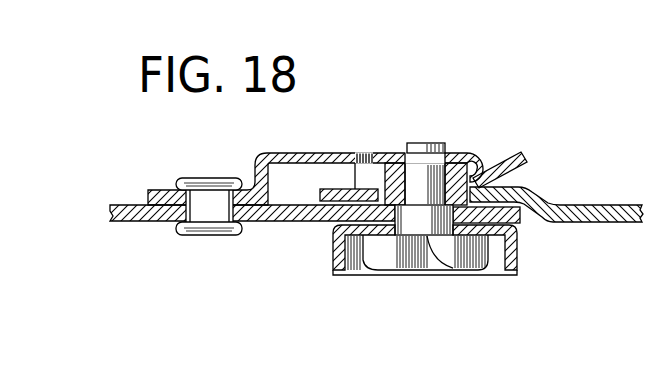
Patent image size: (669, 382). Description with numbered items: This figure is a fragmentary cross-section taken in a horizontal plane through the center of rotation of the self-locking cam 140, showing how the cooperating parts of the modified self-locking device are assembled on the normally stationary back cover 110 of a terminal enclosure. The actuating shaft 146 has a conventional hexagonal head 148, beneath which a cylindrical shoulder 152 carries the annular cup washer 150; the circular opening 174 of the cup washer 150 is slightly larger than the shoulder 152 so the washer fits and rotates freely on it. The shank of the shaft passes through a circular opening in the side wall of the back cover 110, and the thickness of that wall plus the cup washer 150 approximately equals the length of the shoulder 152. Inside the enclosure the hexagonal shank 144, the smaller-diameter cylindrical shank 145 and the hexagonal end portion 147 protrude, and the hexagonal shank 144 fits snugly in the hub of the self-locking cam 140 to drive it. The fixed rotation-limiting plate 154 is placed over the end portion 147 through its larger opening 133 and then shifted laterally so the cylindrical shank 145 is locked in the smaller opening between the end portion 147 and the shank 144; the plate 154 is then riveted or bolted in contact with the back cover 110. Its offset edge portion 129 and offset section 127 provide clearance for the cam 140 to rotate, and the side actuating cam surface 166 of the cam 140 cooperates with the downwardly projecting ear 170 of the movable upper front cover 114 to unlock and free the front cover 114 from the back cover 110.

The back cover 110 is at (133, 222).
The upper front cover 114 is at (557, 173).
The offset section 127 is at (326, 134).
The offset edge portion 129 is at (497, 156).
The larger opening 133 is at (359, 153).
The self-locking cam 140 is at (393, 141).
The shank 144 is at (462, 151).
The cylindrical shank 145 is at (445, 151).
The actuating shaft 146 is at (367, 276).
The end portion 147 is at (422, 143).
The hexagonal head 148 is at (382, 260).
The cup washer 150 is at (518, 262).
The cylindrical shoulder 152 is at (432, 230).
The rotation-limiting plate 154 is at (250, 150).
The side actuating cam surface 166 is at (373, 177).
The ear 170 is at (346, 180).
The circular opening 174 is at (424, 236).